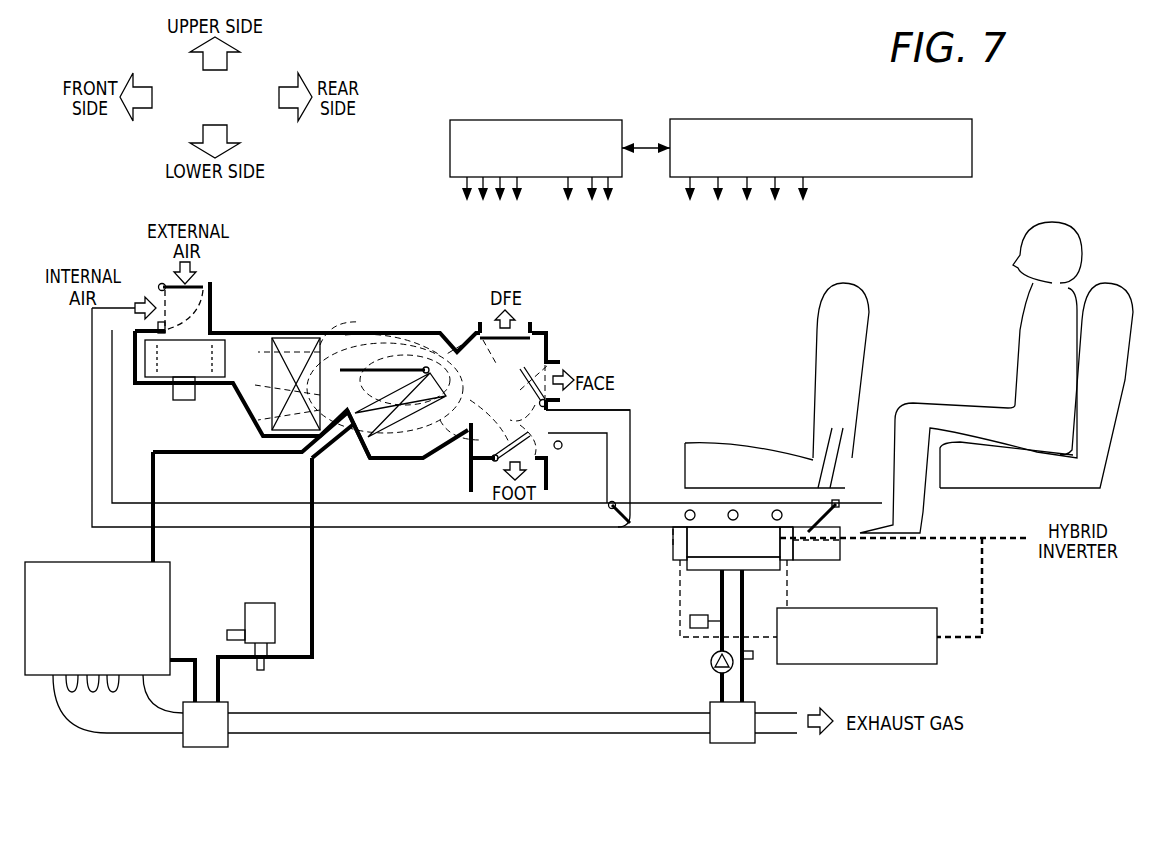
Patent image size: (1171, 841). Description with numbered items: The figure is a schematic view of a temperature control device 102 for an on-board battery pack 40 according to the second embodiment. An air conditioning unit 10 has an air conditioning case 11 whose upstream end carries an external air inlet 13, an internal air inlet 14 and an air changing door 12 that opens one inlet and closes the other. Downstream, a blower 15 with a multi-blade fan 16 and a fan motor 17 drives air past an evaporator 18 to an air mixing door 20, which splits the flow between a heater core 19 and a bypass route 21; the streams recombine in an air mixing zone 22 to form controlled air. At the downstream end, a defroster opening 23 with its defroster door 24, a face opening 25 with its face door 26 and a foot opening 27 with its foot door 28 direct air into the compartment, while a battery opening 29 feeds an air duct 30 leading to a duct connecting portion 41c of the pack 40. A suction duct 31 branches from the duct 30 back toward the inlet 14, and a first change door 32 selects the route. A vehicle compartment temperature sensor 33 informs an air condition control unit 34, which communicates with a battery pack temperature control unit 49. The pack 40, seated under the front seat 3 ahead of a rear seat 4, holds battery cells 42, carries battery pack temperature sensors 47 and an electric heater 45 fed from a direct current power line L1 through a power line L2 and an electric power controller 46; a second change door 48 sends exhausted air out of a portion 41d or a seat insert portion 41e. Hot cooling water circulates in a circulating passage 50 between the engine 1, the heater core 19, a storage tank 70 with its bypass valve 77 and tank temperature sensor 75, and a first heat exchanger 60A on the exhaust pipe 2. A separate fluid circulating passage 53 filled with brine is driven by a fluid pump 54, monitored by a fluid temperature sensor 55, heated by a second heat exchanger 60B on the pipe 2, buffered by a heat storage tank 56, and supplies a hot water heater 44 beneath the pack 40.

The engine 1 is at (50, 562).
The exhaust pipe 2 is at (486, 735).
The front seat 3 is at (852, 282).
The rear seat 4 is at (1116, 284).
The air conditioning unit 10 is at (251, 330).
The air conditioning case 11 is at (214, 302).
The air changing door 12 is at (203, 287).
The external air inlet 13 is at (175, 286).
The internal air inlet 14 is at (160, 290).
The blower 15 is at (350, 327).
The multi-blade fan 16 is at (172, 388).
The fan motor 17 is at (140, 445).
The evaporator 18 is at (296, 336).
The heater core 19 is at (380, 445).
The air mixing door 20 is at (483, 201).
The bypass route 21 is at (400, 335).
The air mixing zone 22 is at (546, 350).
The defroster opening 23 is at (482, 325).
The defroster door 24 is at (531, 326).
The face opening 25 is at (562, 378).
The face door 26 is at (555, 356).
The foot opening 27 is at (470, 472).
The foot door 28 is at (592, 201).
The battery opening 29 is at (552, 425).
The air duct 30 is at (631, 440).
The suction duct 31 is at (535, 528).
The first change door 32 is at (598, 556).
The vehicle compartment temperature sensor 33 is at (568, 119).
The air condition control unit 34 is at (450, 135).
The battery pack 40 is at (828, 565).
The duct connecting portion 41c is at (673, 515).
The portion 41d is at (845, 520).
The seat insert portion 41e is at (838, 455).
The battery cells 42 is at (748, 540).
The hot water heater 44 is at (706, 568).
The electric heater 45 is at (678, 545).
The electric power controller 46 is at (915, 607).
The battery pack temperature sensors 47 is at (688, 119).
The second change door 48 is at (825, 545).
The battery pack temperature control unit 49 is at (972, 127).
The circulating passage 50 is at (156, 545).
The fluid circulating passage 53 is at (745, 685).
The fluid pump 54 is at (678, 662).
The fluid temperature sensor 55 is at (755, 660).
The heat storage tank 56 is at (688, 621).
The first heat exchanger 60A is at (199, 748).
The second heat exchanger 60B is at (724, 745).
The storage tank 70 is at (262, 602).
The tank temperature sensor 75 is at (717, 119).
The bypass valve 77 is at (267, 672).
The temperature control device 102 is at (466, 104).
The direct current power line L1 is at (960, 536).
The power line L2 is at (992, 588).